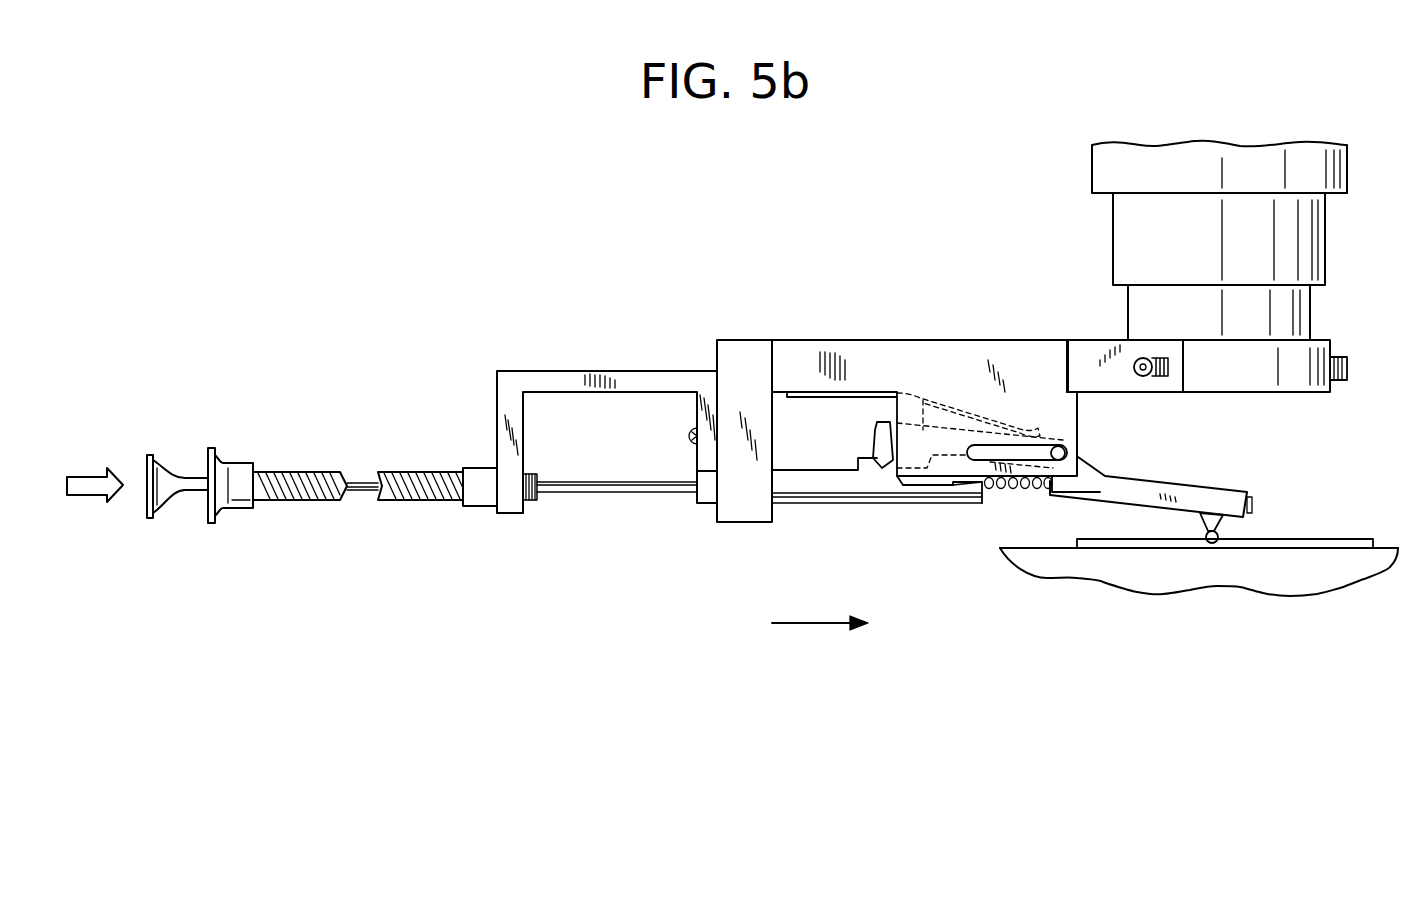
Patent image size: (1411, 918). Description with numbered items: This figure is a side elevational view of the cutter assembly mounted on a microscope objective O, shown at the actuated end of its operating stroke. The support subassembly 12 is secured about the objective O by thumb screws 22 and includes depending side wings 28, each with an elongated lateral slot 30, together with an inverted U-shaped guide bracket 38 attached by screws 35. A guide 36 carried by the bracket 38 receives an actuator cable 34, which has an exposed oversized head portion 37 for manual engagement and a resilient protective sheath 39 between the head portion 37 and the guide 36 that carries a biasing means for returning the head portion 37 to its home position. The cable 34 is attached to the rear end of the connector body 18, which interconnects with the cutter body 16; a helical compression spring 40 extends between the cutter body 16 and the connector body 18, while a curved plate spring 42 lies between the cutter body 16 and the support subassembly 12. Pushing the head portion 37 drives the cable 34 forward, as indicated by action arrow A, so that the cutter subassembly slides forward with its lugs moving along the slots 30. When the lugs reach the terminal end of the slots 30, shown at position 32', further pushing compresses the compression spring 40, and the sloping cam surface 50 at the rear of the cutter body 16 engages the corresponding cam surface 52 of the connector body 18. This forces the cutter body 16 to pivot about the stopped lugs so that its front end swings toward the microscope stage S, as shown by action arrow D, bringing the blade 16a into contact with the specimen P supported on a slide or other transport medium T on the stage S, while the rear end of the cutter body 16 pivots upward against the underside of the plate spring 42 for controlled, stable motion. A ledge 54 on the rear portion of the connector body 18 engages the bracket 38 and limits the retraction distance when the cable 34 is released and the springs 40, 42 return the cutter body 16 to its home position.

The support subassembly 12 is at (800, 363).
The cutter body 16 is at (922, 400).
The blade 16a is at (1200, 527).
The connector body 18 is at (810, 503).
The thumb screws 22 is at (1348, 367).
The side wings 28 is at (1060, 414).
The lateral slot 30 is at (1020, 450).
The lug at terminal end of slot 32' is at (1071, 447).
The actuator cable 34 is at (361, 490).
The screws 35 is at (690, 433).
The guide 36 is at (470, 468).
The head portion 37 is at (152, 455).
The guide bracket 38 is at (570, 380).
The protective sheath 39 is at (298, 470).
The compression spring 40 is at (935, 495).
The plate spring 42 is at (943, 402).
The cam surface 50 is at (882, 470).
The cam surface 52 is at (892, 465).
The ledge 54 is at (858, 465).
The action arrow A is at (85, 475).
The action arrow D is at (1232, 478).
The microscope objective O is at (1310, 246).
The specimen P is at (1218, 535).
The microscope stage S is at (1320, 573).
The transport medium T is at (1323, 540).